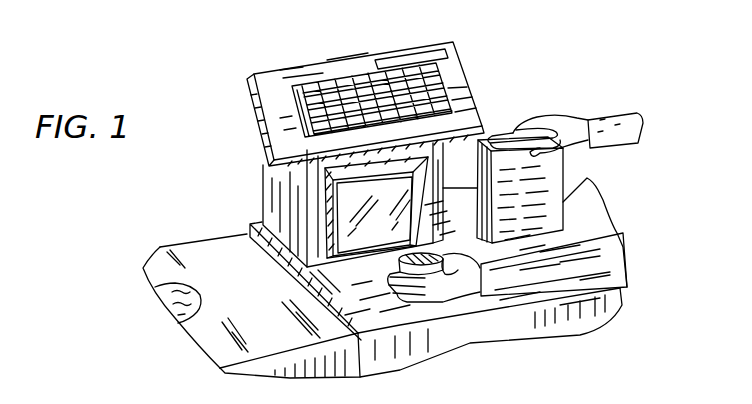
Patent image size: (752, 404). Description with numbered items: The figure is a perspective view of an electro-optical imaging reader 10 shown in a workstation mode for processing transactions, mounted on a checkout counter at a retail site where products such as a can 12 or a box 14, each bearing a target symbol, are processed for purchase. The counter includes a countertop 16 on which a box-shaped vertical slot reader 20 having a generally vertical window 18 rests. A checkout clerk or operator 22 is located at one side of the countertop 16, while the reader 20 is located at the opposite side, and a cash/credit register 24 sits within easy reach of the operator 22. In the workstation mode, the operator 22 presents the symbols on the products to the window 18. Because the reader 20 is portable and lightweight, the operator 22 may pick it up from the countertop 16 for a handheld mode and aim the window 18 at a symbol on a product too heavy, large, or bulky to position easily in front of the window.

The electro-optical imaging reader 10 is at (507, 113).
The can 12 is at (420, 307).
The box 14 is at (548, 173).
The countertop 16 is at (377, 323).
The vertical window 18 is at (345, 250).
The vertical slot reader 20 is at (327, 189).
The operator 22 is at (617, 250).
The cash/credit register 24 is at (327, 73).